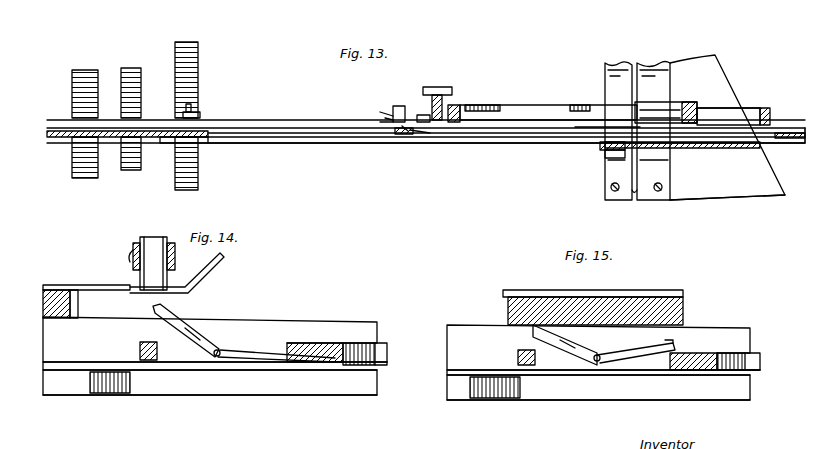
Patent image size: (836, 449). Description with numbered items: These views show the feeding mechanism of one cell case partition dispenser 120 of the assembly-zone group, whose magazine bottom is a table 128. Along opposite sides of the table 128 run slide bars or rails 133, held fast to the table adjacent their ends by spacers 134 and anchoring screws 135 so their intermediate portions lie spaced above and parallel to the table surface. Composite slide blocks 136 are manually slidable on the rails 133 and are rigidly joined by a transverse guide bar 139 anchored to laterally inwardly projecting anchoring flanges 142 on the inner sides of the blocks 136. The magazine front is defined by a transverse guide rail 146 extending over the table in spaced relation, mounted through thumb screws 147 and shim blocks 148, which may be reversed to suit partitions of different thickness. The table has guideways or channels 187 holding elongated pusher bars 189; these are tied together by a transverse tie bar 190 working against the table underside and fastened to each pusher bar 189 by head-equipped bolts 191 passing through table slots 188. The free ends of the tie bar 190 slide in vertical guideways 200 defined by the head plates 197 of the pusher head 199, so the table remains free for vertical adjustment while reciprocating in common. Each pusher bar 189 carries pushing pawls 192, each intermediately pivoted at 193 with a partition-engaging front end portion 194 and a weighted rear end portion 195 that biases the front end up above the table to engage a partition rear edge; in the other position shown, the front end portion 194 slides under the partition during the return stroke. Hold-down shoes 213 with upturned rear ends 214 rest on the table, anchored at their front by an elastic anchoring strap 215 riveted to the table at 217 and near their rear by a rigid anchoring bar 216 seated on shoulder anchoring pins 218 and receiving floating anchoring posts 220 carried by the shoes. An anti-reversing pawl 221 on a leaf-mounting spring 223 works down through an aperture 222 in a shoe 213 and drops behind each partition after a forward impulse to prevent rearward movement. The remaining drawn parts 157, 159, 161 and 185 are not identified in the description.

In FIG. 13, the cell case partition dispenser 120 is at (530, 105).
In FIG. 13, the table 128 is at (360, 136).
In FIG. 14, the table 128 is at (320, 323).
In FIG. 15, the table 128 is at (730, 333).
In FIG. 13, the slide bars or rails 133 is at (745, 112).
In FIG. 13, the spacers 134 is at (772, 128).
In FIG. 13, the anchoring screws 135 is at (460, 105).
In FIG. 13, the composite slide blocks 136 is at (668, 103).
In FIG. 13, the transverse guide bar or rail 139 is at (690, 104).
In FIG. 13, the anchoring flanges 142 is at (735, 106).
In FIG. 13, the transverse guide rail 146 is at (423, 115).
In FIG. 13, the thumb screws 147 is at (445, 87).
In FIG. 13, the shim blocks 148 is at (385, 118).
In FIG. 13, the gear 157 is at (84, 70).
In FIG. 13, the gear 159 is at (196, 44).
In FIG. 13, the plate 161 is at (205, 143).
In FIG. 13, the gear 185 is at (133, 68).
In FIG. 13, the table guideways or channels 187 is at (208, 125).
In FIG. 14, the table guideways or channels 187 is at (100, 358).
In FIG. 15, the table guideways or channels 187 is at (470, 366).
In FIG. 13, the table slots 188 is at (408, 134).
In FIG. 14, the table slots 188 is at (340, 388).
In FIG. 15, the table slots 188 is at (565, 383).
In FIG. 13, the pusher bar 189 is at (555, 130).
In FIG. 14, the pusher bar 189 is at (375, 345).
In FIG. 15, the pusher bar 189 is at (750, 357).
In FIG. 13, the transverse tie bar 190 is at (603, 147).
In FIG. 13, the head-equipped bolts 191 is at (608, 157).
In FIG. 13, the partition-engaging pushing pawls 192 is at (403, 127).
In FIG. 14, the partition-engaging pushing pawls 192 is at (205, 340).
In FIG. 15, the partition-engaging pushing pawls 192 is at (555, 340).
In FIG. 13, the pivot 193 is at (412, 131).
In FIG. 14, the pivot 193 is at (220, 350).
In FIG. 15, the pivot 193 is at (598, 362).
In FIG. 13, the partition-engaging front end portions 194 is at (380, 122).
In FIG. 14, the partition-engaging front end portions 194 is at (170, 303).
In FIG. 15, the partition-engaging front end portions 194 is at (533, 332).
In FIG. 14, the weighted rear end portions 195 is at (275, 350).
In FIG. 15, the weighted rear end portions 195 is at (650, 345).
In FIG. 13, the vertical head plates 197 is at (695, 127).
In FIG. 13, the pusher head 199 is at (705, 192).
In FIG. 13, the vertical guideways 200 is at (640, 198).
In FIG. 14, the hold-down shoes 213 is at (58, 300).
In FIG. 15, the hold-down shoes 213 is at (508, 296).
In FIG. 14, the upturned rear ends 214 is at (215, 263).
In FIG. 13, the anchoring straps 215 is at (190, 105).
In FIG. 13, the anchoring bars 216 is at (393, 110).
In FIG. 14, the anchoring bars 216 is at (133, 250).
In FIG. 13, the rivet 217 is at (198, 113).
In FIG. 13, the shoulder anchoring pins 218 is at (380, 112).
In FIG. 14, the anchoring post 220 is at (153, 245).
In FIG. 14, the anti-reversing pawl 221 is at (92, 320).
In FIG. 15, the anti-reversing pawl 221 is at (526, 357).
In FIG. 14, the apertures 222 is at (132, 288).
In FIG. 14, the leaf-mounting spring 223 is at (52, 285).
In FIG. 15, the leaf-mounting spring 223 is at (540, 292).